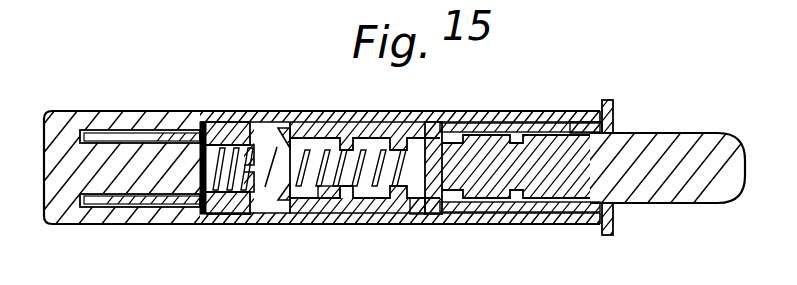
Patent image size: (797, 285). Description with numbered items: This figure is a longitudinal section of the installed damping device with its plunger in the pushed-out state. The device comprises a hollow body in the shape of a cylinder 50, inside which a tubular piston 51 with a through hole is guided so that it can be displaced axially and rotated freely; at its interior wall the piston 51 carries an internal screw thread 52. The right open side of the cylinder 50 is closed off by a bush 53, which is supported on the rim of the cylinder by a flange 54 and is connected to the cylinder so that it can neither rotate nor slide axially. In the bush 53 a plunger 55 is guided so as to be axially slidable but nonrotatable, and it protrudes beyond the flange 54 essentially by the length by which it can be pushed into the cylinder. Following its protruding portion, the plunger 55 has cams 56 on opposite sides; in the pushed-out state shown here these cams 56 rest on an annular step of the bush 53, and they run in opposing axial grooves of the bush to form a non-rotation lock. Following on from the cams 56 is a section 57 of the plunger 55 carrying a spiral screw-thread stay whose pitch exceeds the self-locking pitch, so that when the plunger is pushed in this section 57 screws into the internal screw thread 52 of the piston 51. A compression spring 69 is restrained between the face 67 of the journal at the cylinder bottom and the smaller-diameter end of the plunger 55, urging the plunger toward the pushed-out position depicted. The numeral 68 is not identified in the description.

The cylinder 50 is at (270, 115).
The piston 51 is at (432, 117).
The internal screw thread 52 is at (353, 116).
The bush 53 is at (577, 116).
The flange 54 is at (612, 107).
The plunger 55 is at (655, 177).
The cams 56 is at (605, 216).
The section of the plunger 57 is at (547, 116).
The face of the journal 67 is at (199, 167).
The lower stop 68 is at (420, 200).
The compression spring 69 is at (330, 200).